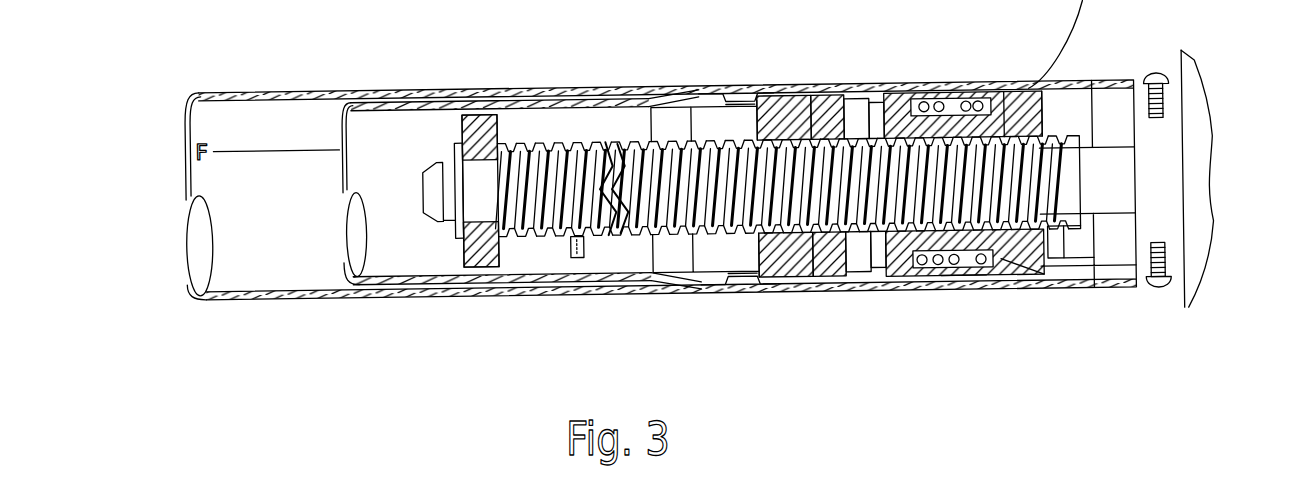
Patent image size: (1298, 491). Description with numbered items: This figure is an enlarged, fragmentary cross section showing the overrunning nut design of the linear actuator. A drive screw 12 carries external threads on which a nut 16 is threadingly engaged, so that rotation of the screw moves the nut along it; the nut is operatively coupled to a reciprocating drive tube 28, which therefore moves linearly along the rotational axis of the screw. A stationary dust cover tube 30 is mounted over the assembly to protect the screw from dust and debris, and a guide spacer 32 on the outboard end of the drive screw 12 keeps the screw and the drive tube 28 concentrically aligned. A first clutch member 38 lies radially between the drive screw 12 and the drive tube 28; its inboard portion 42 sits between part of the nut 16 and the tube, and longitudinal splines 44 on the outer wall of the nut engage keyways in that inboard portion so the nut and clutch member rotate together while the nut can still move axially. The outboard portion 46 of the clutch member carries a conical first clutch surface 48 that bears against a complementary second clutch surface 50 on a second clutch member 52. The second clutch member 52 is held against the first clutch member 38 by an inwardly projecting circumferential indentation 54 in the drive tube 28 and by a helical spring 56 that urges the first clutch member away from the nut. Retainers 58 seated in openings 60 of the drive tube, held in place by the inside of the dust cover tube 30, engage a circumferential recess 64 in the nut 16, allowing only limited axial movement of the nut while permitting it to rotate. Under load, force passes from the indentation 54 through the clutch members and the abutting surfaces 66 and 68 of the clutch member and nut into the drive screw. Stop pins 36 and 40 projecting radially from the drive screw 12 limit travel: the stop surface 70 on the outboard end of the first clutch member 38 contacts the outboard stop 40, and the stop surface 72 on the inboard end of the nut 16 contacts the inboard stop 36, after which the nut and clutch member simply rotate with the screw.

The drive screw 12 is at (648, 274).
The nut 16 is at (945, 141).
The drive tube 28 is at (393, 278).
The dust cover tube 30 is at (255, 301).
The guide spacer 32 is at (482, 111).
The inboard stop 36 is at (1045, 260).
The first clutch member 38 is at (836, 289).
The outboard stop 40 is at (566, 270).
The inboard portion 42 is at (900, 120).
The longitudinal splines 44 is at (925, 115).
The outboard portion 46 is at (858, 109).
The first clutch surface 48 is at (838, 104).
The second clutch surface 50 is at (808, 104).
The second clutch member 52 is at (790, 270).
The circumferential indentation 54 is at (750, 103).
The helical spring 56 is at (958, 296).
The retainer 58 is at (1005, 111).
The openings 60 is at (980, 291).
The recess 64 is at (985, 138).
The abutting surface 66 is at (820, 284).
The abutting surface 68 is at (868, 287).
The stop surface 70 is at (755, 273).
The stop surface 72 is at (1013, 247).